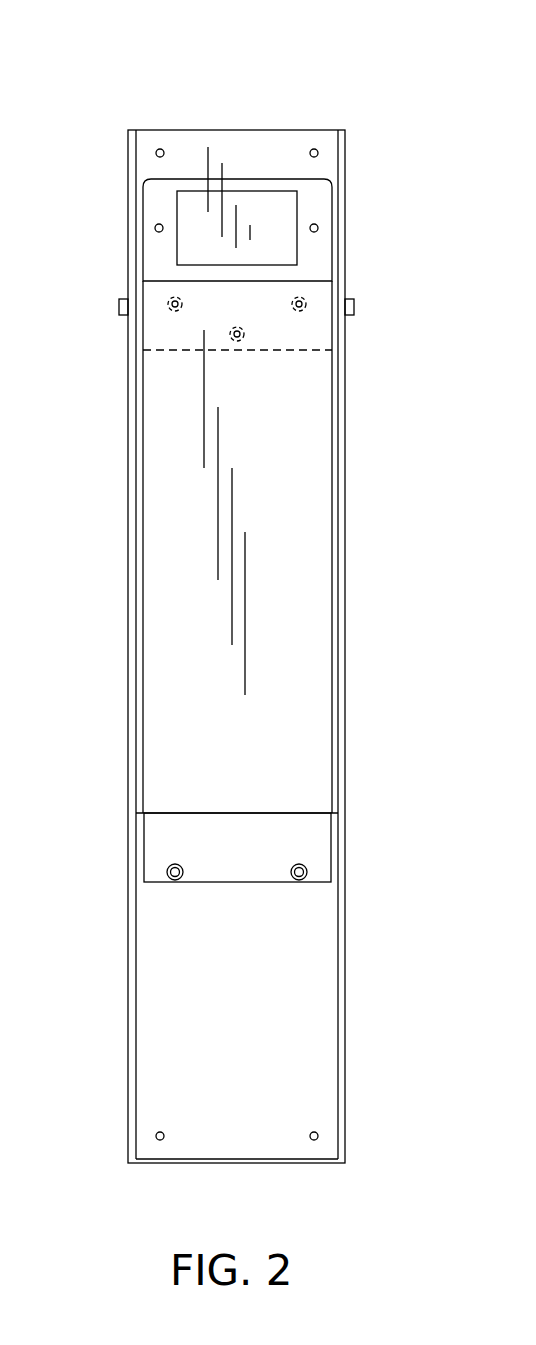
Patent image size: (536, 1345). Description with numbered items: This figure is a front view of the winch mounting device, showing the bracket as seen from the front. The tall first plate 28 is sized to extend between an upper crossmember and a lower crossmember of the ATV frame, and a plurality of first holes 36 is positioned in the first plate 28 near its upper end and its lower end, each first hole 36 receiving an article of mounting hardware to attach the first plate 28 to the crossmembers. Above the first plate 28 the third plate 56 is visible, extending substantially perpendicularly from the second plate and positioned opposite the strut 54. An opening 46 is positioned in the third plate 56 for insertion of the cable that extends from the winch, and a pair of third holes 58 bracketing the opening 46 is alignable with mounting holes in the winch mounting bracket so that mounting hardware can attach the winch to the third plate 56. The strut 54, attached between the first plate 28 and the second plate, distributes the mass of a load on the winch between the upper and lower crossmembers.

The first plate 28 is at (260, 965).
The first hole 36 is at (311, 151).
The opening 46 is at (247, 230).
The strut 54 is at (278, 485).
The third plate 56 is at (317, 258).
The third hole 58 is at (311, 230).